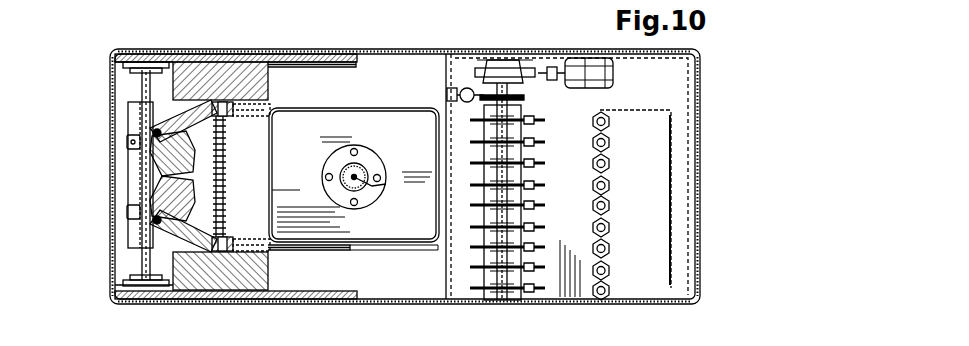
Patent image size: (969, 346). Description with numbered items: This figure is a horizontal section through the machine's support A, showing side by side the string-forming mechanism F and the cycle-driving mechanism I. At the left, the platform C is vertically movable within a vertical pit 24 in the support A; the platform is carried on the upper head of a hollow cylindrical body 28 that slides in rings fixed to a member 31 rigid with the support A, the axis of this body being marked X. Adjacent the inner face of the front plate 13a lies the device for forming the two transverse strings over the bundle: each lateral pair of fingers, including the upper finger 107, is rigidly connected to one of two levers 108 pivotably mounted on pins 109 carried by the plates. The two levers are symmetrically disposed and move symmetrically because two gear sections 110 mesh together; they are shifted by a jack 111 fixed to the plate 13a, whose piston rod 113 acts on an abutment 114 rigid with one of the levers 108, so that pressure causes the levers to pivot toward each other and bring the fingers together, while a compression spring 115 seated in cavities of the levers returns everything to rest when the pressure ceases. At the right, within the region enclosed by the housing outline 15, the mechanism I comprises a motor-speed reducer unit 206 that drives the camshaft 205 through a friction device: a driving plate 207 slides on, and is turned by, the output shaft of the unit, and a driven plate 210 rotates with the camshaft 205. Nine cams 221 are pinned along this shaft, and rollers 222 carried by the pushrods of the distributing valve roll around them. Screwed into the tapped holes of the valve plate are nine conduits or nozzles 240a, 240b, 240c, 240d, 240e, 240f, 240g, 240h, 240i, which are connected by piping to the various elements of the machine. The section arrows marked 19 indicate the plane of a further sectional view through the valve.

The housing 15 is at (427, 49).
The motor-speed reducer unit 206 is at (585, 68).
The driving plate 207 is at (523, 92).
The driven plate 210 is at (530, 108).
The camshaft 205 is at (520, 238).
The cams 221 is at (520, 283).
The rollers 222 is at (548, 268).
The conduit or nozzle 240a is at (611, 123).
The conduit or nozzle 240b is at (611, 144).
The conduit or nozzle 240c is at (611, 166).
The conduit or nozzle 240d is at (611, 187).
The conduit or nozzle 240e is at (611, 208).
The conduit or nozzle 240f is at (611, 229).
The conduit or nozzle 240g is at (611, 251).
The conduit or nozzle 240h is at (611, 272).
The conduit or nozzle 240i is at (611, 293).
The pins 109 is at (154, 133).
The abutment 114 is at (131, 136).
The rod 113 is at (138, 158).
The jack 111 is at (142, 178).
The gear sections 110 is at (158, 174).
The levers 108 is at (201, 102).
The upper finger 107 is at (266, 100).
The front plate 13a is at (272, 142).
The compression spring 115 is at (232, 152).
The vertical pit 24 is at (272, 192).
The hollow cylindrical body 28 is at (384, 185).
The member 31 is at (388, 224).
The hub axis X is at (354, 177).
The platform C is at (404, 118).
The section line 19 is at (466, 158).
The mechanism for forming the strings F is at (128, 248).
The mechanism for driving the machine I is at (690, 83).
The support A is at (706, 230).